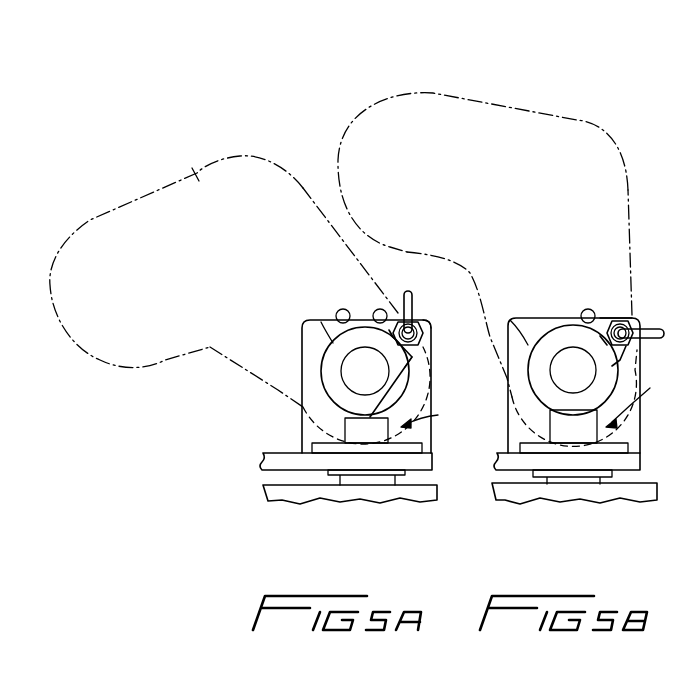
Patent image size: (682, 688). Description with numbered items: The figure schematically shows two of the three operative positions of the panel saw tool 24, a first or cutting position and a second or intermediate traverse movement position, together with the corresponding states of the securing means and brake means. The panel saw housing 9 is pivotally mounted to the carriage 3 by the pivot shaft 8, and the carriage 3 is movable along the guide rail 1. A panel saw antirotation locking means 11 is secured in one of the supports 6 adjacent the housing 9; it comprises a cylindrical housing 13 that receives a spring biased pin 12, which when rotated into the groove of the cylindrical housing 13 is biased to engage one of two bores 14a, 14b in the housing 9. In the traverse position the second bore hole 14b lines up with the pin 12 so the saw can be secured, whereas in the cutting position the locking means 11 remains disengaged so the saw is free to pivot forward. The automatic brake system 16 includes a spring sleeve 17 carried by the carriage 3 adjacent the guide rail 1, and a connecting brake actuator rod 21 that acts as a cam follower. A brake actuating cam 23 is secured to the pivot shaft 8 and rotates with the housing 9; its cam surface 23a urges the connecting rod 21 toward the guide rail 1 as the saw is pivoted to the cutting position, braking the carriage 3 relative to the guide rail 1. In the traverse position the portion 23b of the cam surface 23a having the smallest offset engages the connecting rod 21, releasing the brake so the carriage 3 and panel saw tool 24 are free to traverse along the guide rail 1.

In FIG. 5A, the guide rail 1 is at (315, 493).
In FIG. 5B, the guide rail 1 is at (525, 493).
In FIG. 5A, the carriage 3 is at (418, 463).
In FIG. 5B, the carriage 3 is at (630, 460).
In FIG. 5A, the support 6 is at (311, 433).
In FIG. 5B, the support 6 is at (517, 428).
In FIG. 5A, the pivot shaft 8 is at (365, 371).
In FIG. 5B, the pivot shaft 8 is at (573, 370).
In FIG. 5A, the panel saw housing 9 is at (195, 174).
In FIG. 5B, the panel saw housing 9 is at (543, 128).
In FIG. 5A, the panel saw antirotation locking means 11 is at (429, 312).
In FIG. 5B, the panel saw antirotation locking means 11 is at (615, 310).
In FIG. 5A, the spring biased pin 12 is at (408, 290).
In FIG. 5B, the spring biased pin 12 is at (662, 328).
In FIG. 5A, the cylindrical housing 13 is at (424, 342).
In FIG. 5B, the cylindrical housing 13 is at (627, 327).
In FIG. 5A, the first bore 14a is at (343, 309).
In FIG. 5B, the first bore 14a is at (588, 309).
In FIG. 5A, the second bore hole 14b is at (380, 309).
In FIG. 5A, the automatic brake system 16 is at (432, 417).
In FIG. 5B, the automatic brake system 16 is at (637, 402).
In FIG. 5A, the spring sleeve 17 is at (412, 450).
In FIG. 5B, the spring sleeve 17 is at (618, 445).
In FIG. 5A, the connecting brake actuator rod 21 is at (345, 432).
In FIG. 5B, the connecting brake actuator rod 21 is at (553, 427).
In FIG. 5A, the brake actuating cam 23 is at (336, 368).
In FIG. 5B, the brake actuating cam 23 is at (550, 337).
In FIG. 5A, the cam surface 23a is at (333, 343).
In FIG. 5B, the cam surface 23a is at (510, 320).
In FIG. 5A, the portion of cam surface having smallest cam offset 23b is at (425, 392).
In FIG. 5A, the panel saw tool 24 is at (117, 204).
In FIG. 5B, the panel saw tool 24 is at (490, 97).